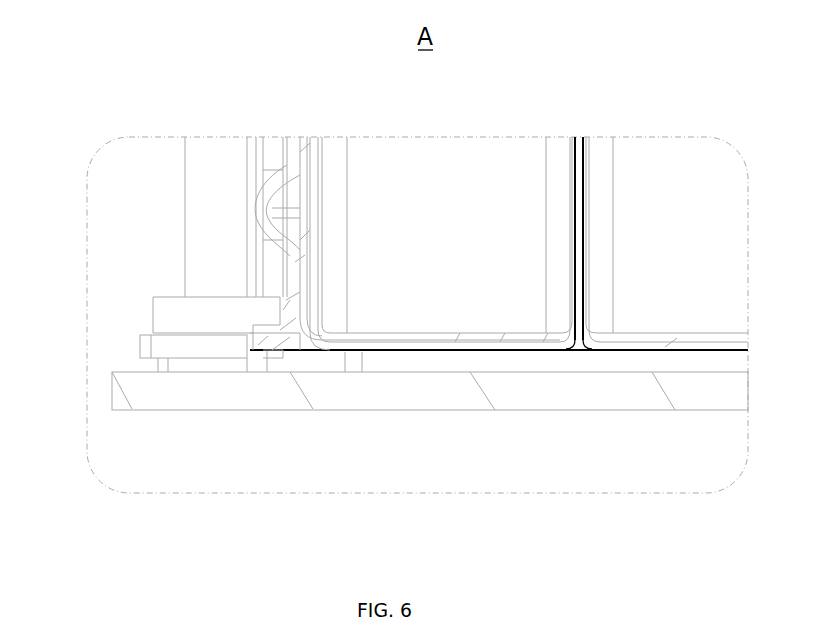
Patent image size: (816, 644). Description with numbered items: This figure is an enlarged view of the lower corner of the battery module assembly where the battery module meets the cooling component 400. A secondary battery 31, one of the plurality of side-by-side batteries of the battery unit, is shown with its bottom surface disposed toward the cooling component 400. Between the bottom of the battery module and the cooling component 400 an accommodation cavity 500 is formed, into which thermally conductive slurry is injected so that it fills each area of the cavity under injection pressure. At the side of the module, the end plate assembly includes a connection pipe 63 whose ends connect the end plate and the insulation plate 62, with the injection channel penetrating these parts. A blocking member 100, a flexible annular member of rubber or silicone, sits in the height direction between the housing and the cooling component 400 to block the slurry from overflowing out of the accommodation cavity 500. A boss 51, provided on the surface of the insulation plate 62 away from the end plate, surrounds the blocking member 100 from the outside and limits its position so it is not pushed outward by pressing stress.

The secondary battery 31 is at (457, 180).
The connection pipe 63 is at (213, 177).
The insulation plate 62 is at (183, 315).
The boss 51 is at (255, 355).
The blocking member 100 is at (283, 356).
The accommodation cavity 500 is at (432, 360).
The cooling component 400 is at (595, 393).